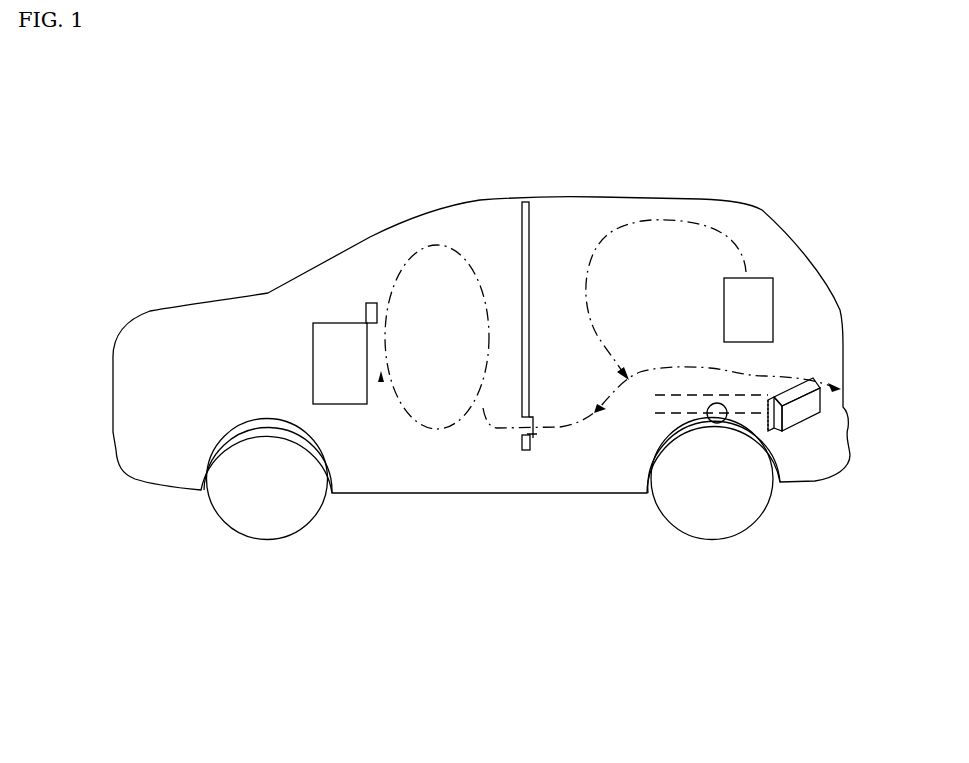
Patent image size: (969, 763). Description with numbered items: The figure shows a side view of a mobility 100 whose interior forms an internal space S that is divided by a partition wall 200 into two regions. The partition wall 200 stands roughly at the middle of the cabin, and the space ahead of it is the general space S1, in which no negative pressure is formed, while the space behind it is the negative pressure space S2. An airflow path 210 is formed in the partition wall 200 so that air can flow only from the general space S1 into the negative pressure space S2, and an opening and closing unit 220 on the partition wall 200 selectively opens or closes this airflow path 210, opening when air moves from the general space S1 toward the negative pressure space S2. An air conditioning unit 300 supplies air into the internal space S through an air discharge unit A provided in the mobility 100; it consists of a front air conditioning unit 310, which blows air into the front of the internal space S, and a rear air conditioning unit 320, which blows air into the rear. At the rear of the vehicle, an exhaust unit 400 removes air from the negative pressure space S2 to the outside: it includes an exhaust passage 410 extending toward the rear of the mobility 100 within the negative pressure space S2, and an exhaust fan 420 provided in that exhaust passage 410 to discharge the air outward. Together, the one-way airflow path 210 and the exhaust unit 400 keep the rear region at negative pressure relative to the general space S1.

The mobility 100 is at (572, 186).
The partition wall 200 is at (530, 281).
The airflow path 210 is at (525, 453).
The opening and closing unit 220 is at (534, 430).
The air conditioning unit 300 is at (506, 255).
The front air conditioning unit 310 is at (337, 355).
The rear air conditioning unit 320 is at (757, 306).
The air discharge unit A is at (367, 303).
The internal space S is at (608, 247).
The general space S1 is at (438, 348).
The negative pressure space S2 is at (586, 353).
The exhaust unit 400 is at (745, 529).
The exhaust passage 410 is at (718, 424).
The exhaust fan 420 is at (798, 409).